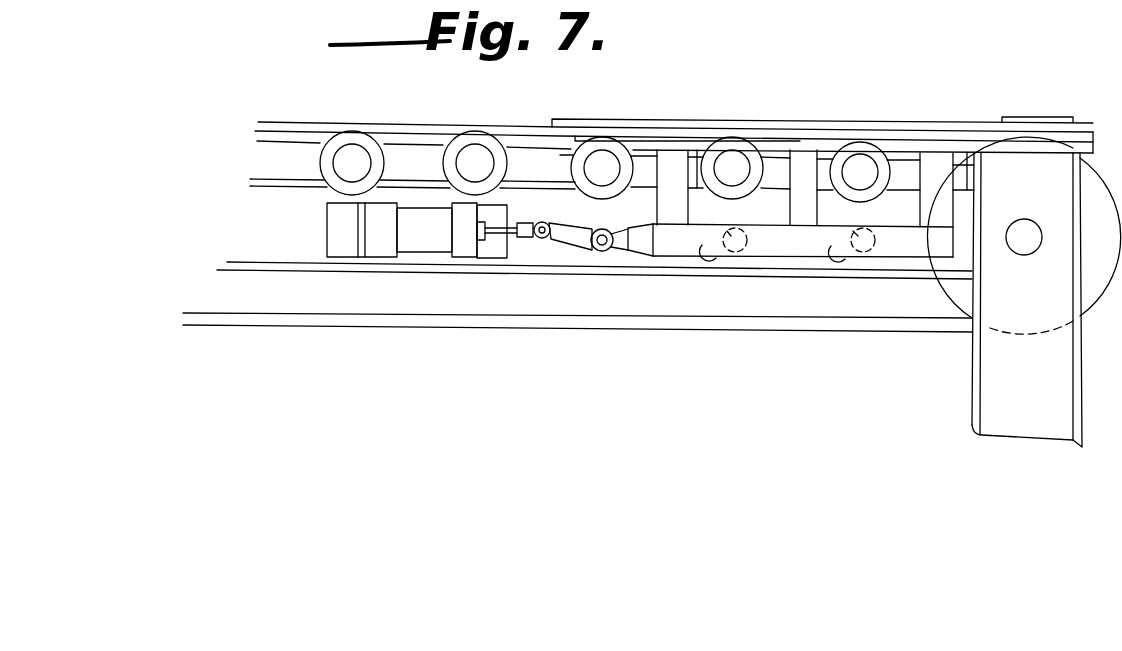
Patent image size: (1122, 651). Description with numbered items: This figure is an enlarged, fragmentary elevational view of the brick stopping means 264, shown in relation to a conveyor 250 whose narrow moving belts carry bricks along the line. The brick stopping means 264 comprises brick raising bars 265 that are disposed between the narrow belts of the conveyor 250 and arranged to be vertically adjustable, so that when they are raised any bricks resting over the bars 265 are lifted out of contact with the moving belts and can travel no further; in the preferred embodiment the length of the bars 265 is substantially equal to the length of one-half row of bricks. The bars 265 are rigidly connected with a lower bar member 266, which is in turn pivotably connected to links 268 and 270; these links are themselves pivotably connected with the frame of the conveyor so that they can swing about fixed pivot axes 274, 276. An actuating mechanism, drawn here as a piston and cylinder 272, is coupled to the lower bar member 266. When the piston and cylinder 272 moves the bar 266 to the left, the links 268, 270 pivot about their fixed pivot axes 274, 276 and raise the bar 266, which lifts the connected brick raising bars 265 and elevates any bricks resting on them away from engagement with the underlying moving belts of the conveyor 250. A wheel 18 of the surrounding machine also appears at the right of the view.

The wheel 18 is at (832, 0).
The conveyor 250 is at (548, 339).
The brick stopping means 264 is at (712, 92).
The brick raising bars 265 is at (937, 124).
The lower bar member 266 is at (802, 250).
The link 268 is at (731, 257).
The link 270 is at (862, 258).
The piston and cylinder 272 is at (440, 244).
The fixed pivot axis 274 is at (700, 259).
The fixed pivot axis 276 is at (830, 258).